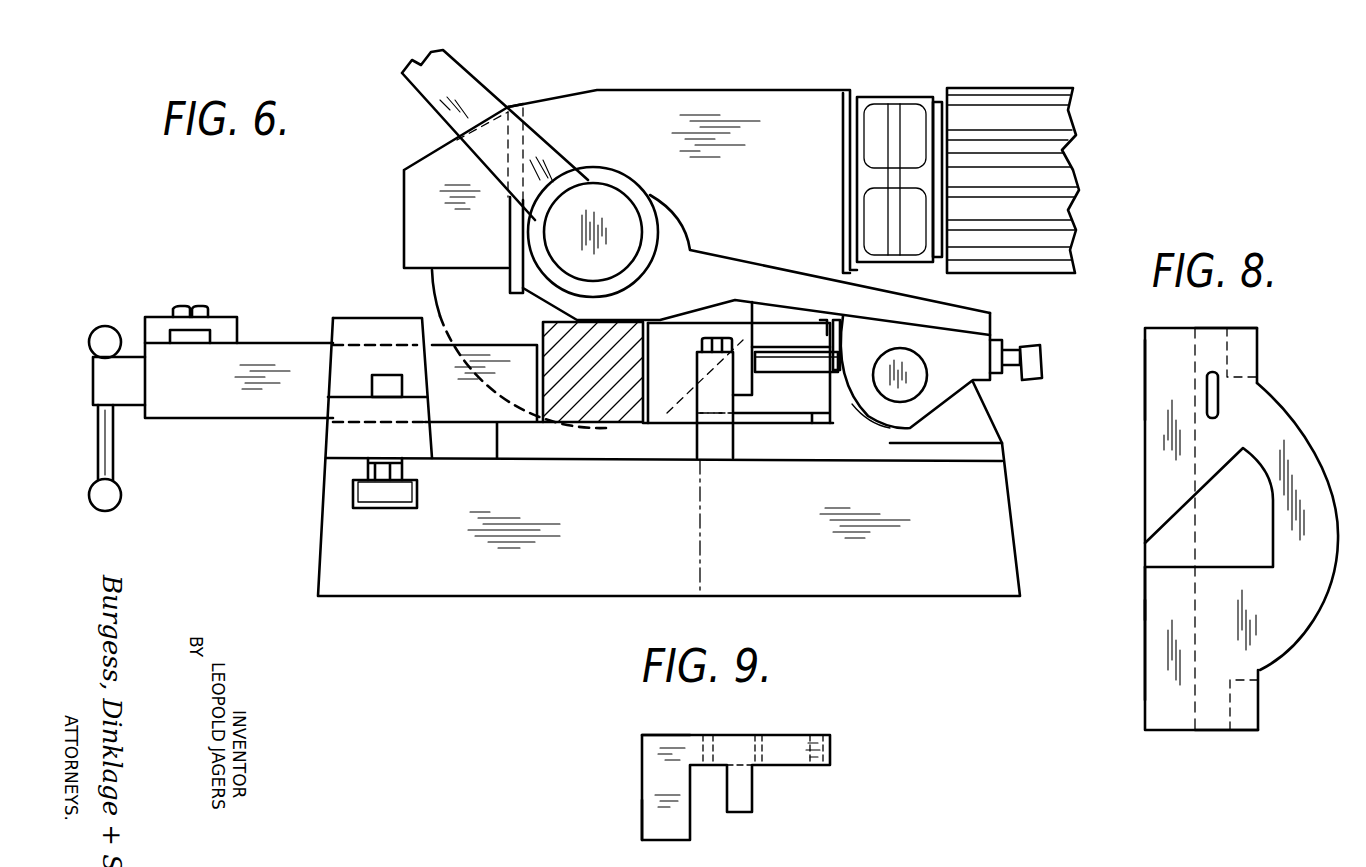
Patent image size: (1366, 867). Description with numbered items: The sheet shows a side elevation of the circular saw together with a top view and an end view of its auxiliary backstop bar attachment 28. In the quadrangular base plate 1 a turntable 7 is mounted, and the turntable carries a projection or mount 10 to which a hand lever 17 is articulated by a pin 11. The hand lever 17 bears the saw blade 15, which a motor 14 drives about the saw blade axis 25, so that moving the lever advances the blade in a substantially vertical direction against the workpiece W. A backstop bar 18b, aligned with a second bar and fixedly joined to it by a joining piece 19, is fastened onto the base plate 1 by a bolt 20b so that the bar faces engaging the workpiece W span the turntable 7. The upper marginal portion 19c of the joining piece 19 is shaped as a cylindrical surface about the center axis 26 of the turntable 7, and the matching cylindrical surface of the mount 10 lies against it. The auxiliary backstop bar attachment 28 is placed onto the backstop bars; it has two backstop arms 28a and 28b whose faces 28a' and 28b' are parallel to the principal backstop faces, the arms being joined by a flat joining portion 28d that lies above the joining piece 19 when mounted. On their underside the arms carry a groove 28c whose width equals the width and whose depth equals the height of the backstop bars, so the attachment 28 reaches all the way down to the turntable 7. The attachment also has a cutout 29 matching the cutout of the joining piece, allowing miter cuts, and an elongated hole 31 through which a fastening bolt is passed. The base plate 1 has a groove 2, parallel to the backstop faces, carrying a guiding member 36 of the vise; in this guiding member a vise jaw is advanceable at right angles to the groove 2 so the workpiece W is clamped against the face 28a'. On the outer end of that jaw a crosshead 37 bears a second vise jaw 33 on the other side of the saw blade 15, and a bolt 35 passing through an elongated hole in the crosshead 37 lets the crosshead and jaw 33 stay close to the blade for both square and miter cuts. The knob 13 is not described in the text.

In FIG. 6, the base plate 1 is at (1000, 546).
In FIG. 6, the groove 2 is at (352, 497).
In FIG. 6, the turntable 7 is at (583, 450).
In FIG. 6, the projection or mount 10 is at (975, 422).
In FIG. 6, the pin 11 is at (903, 393).
In FIG. 6, the handle knob 13 is at (960, 373).
In FIG. 6, the motor 14 is at (990, 105).
In FIG. 6, the saw blade 15 is at (440, 296).
In FIG. 6, the hand lever 17 is at (468, 77).
In FIG. 6, the backstop bar 18b is at (713, 400).
In FIG. 6, the joining piece 19 is at (790, 398).
In FIG. 6, the upper marginal portion 19c is at (845, 333).
In FIG. 6, the bolt 20b is at (717, 338).
In FIG. 6, the saw blade axis 25 is at (598, 268).
In FIG. 6, the center axis 26 is at (703, 541).
In FIG. 9, the auxiliary backstop bar attachment 28 is at (737, 720).
In FIG. 8, the backstop arm 28a is at (1174, 529).
In FIG. 8, the face 28a' is at (1116, 380).
In FIG. 6, the backstop arm 28b is at (694, 407).
In FIG. 8, the backstop arm 28b is at (1173, 645).
In FIG. 9, the backstop arm 28b is at (636, 756).
In FIG. 6, the face 28b' is at (622, 406).
In FIG. 8, the face 28b' is at (1118, 593).
In FIG. 9, the face 28b' is at (631, 817).
In FIG. 8, the groove 28c is at (1215, 336).
In FIG. 6, the flat joining portion 28d is at (790, 329).
In FIG. 8, the flat joining portion 28d is at (1298, 441).
In FIG. 9, the flat joining portion 28d is at (808, 741).
In FIG. 8, the cutout 29 is at (1165, 553).
In FIG. 8, the elongated hole 31 is at (1216, 394).
In FIG. 9, the elongated hole 31 is at (707, 735).
In FIG. 6, the second vise jaw 33 is at (246, 404).
In FIG. 6, the bolt 35 is at (190, 306).
In FIG. 6, the guiding member 36 is at (360, 325).
In FIG. 6, the crosshead 37 is at (222, 321).
In FIG. 6, the workpiece W is at (543, 341).